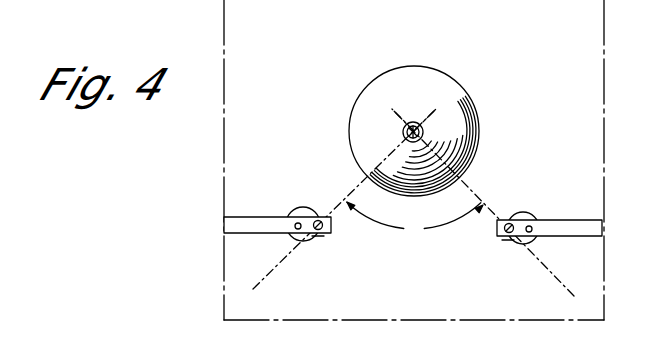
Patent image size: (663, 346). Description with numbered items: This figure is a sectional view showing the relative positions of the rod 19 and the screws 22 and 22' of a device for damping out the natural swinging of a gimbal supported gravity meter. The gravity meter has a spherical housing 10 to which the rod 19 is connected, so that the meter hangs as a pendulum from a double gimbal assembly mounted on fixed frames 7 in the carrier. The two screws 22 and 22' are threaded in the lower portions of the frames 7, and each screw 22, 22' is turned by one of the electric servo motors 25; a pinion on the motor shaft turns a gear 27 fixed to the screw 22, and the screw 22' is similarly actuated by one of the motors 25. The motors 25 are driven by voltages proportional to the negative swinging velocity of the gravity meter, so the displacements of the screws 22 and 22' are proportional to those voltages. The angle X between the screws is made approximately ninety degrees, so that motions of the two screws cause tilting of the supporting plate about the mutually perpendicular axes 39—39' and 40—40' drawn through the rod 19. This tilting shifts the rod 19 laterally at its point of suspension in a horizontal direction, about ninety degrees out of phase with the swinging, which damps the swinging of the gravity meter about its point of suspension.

The frame 7 is at (257, 217).
The spherical housing 10 is at (352, 121).
The rod 19 is at (423, 131).
The screw 22 is at (343, 239).
The screw 22' is at (478, 240).
The servo motor 25 is at (296, 240).
The gear 27 is at (318, 237).
The axis 39 is at (334, 210).
The axis 39' is at (433, 111).
The axis 40 is at (494, 210).
The axis 40' is at (393, 110).
The angle X is at (415, 221).